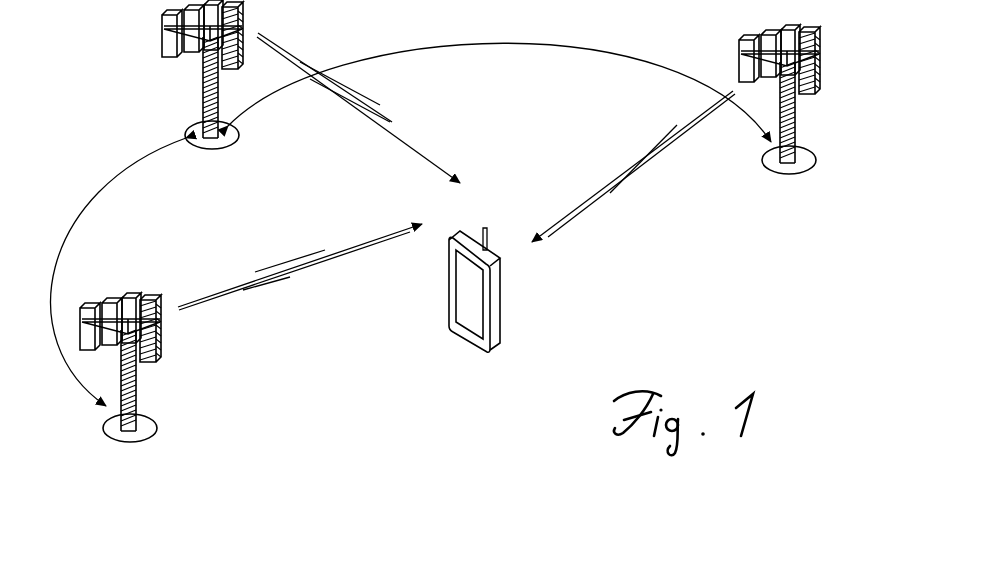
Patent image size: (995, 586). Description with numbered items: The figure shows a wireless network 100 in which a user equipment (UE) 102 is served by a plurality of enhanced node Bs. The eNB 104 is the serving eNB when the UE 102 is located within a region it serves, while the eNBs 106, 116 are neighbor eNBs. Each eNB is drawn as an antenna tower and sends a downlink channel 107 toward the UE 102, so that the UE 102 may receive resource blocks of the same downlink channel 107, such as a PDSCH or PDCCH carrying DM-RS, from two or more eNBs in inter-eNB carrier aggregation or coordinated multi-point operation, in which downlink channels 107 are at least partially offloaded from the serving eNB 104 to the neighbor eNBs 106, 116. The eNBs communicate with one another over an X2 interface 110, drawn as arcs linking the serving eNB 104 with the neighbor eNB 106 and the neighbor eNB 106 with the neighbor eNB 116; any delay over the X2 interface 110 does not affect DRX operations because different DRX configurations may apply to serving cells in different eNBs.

The wireless network 100 is at (431, 418).
The user equipment (UE) 102 is at (478, 280).
The serving eNB 104 is at (806, 57).
The neighbor eNB 106 is at (170, 60).
The downlink channel 107 is at (428, 157).
The X2 interface 110 is at (548, 47).
The neighbor eNB 116 is at (121, 298).